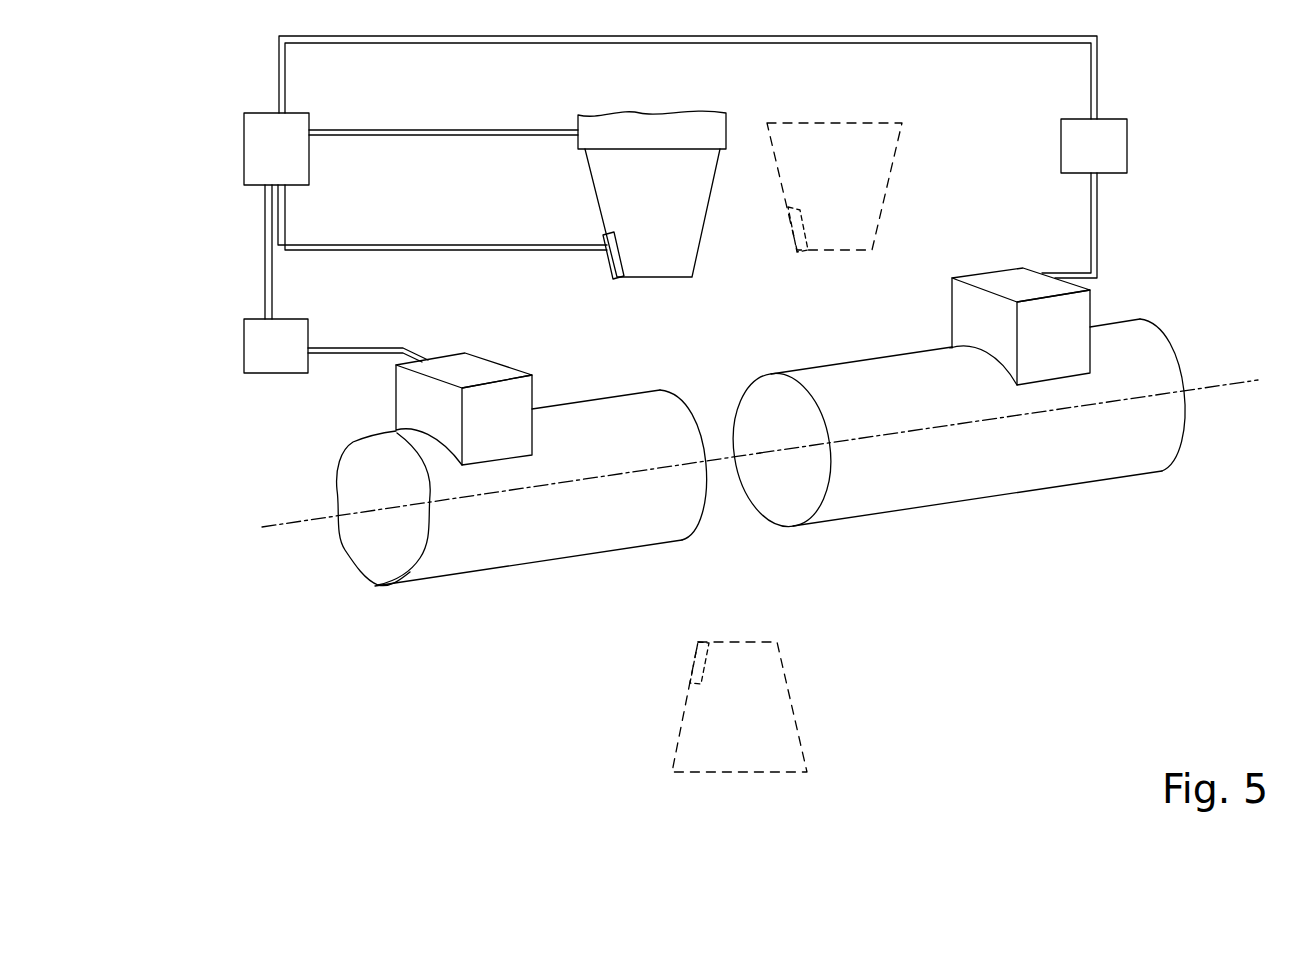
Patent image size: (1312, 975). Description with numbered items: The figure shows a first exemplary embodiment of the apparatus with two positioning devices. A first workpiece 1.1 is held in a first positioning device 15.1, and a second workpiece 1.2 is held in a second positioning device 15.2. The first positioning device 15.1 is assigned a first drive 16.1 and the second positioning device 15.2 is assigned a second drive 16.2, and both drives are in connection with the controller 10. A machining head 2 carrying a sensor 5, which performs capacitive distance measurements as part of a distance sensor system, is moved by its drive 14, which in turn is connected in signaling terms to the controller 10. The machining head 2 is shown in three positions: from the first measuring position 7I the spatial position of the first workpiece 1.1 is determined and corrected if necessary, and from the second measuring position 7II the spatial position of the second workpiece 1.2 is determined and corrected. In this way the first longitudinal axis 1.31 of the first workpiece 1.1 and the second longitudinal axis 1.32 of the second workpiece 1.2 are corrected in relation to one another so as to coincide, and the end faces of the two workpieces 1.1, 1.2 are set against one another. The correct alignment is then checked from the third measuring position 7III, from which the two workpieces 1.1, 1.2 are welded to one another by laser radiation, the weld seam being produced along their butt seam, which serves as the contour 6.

The controller 10 is at (272, 147).
The drive of the machining head 14 is at (612, 132).
The machining head 2 is at (626, 208).
The sensor 5 is at (622, 277).
The first drive 16.1 is at (1113, 145).
The second drive 16.2 is at (263, 347).
The first positioning device 15.1 is at (1073, 315).
The second positioning device 15.2 is at (417, 400).
The first workpiece 1.1 is at (967, 482).
The second workpiece 1.2 is at (545, 543).
The first longitudinal axis 1.31 is at (1220, 383).
The second longitudinal axis 1.32 is at (298, 522).
The contour 6 is at (720, 513).
The first measuring position 7I is at (891, 255).
The second measuring position 7II is at (706, 283).
The third measuring position 7III is at (681, 647).